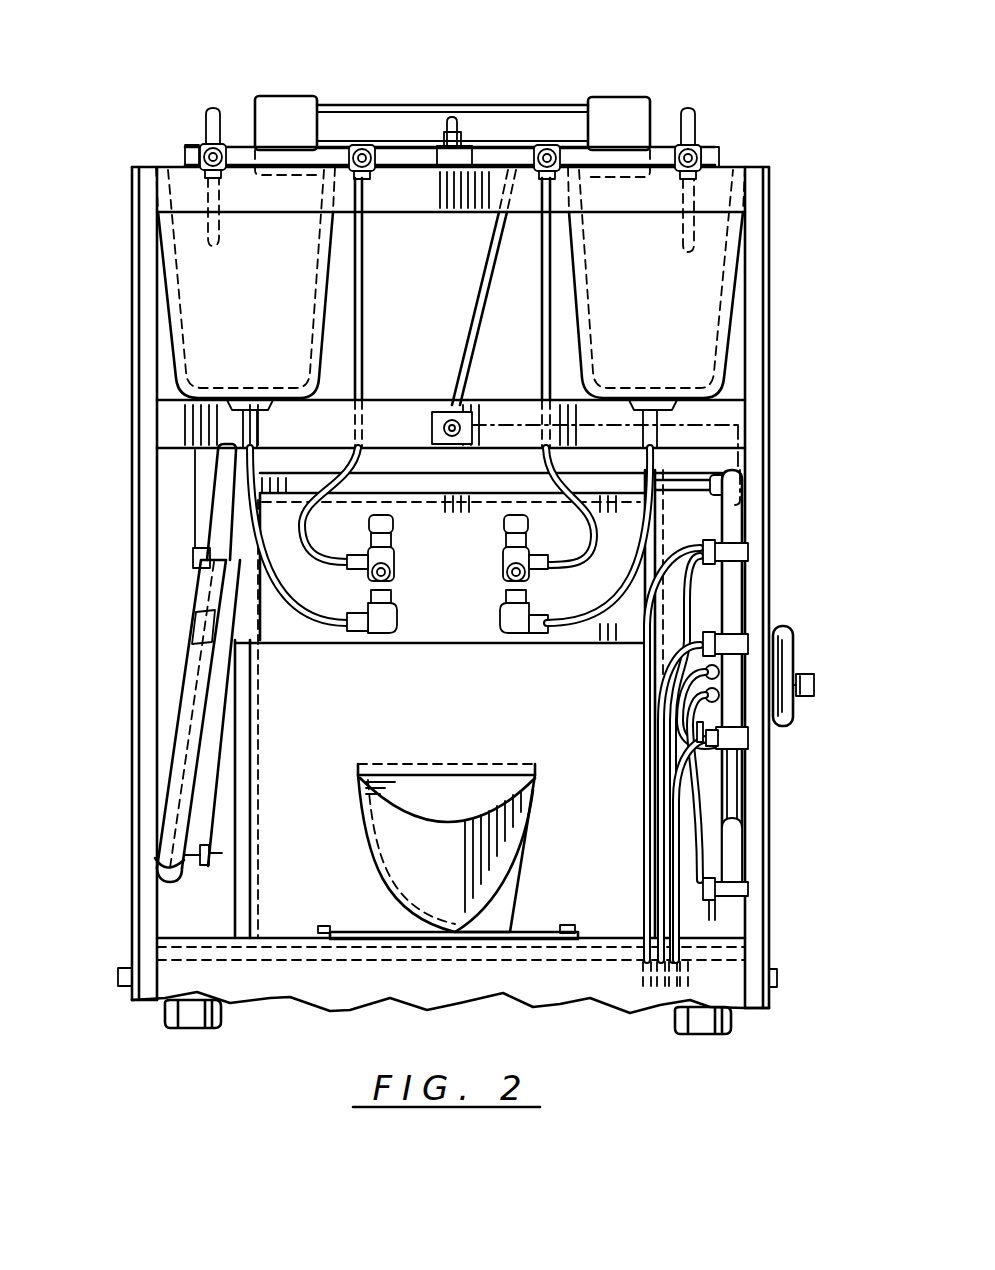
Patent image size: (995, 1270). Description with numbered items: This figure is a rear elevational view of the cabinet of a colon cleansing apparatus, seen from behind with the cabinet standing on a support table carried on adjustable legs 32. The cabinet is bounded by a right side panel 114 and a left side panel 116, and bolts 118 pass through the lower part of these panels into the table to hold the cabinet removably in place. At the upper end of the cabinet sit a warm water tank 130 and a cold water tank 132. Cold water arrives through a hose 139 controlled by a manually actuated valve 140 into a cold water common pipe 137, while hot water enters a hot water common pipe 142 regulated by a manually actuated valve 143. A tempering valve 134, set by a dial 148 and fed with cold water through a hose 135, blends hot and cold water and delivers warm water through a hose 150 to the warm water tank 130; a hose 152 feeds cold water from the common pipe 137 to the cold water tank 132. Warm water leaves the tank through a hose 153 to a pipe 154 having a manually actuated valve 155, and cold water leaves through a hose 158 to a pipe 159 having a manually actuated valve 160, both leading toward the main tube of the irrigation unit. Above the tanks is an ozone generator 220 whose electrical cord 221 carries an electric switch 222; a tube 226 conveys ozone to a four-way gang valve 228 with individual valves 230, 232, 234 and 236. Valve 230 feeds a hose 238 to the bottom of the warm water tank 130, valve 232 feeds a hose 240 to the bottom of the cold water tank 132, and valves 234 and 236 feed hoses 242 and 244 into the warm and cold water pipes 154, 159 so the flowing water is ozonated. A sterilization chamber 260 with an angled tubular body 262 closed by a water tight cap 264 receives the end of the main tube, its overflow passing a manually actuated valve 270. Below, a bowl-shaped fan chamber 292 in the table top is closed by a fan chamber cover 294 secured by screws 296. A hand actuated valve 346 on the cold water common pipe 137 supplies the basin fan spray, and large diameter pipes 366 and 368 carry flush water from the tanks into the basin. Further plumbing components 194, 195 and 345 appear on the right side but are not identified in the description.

The legs 32 is at (215, 1030).
The right side panel 114 is at (769, 275).
The left side panel 116 is at (132, 275).
The bolts 118 is at (125, 978).
The warm water tank 130 is at (612, 333).
The cold water tank 132 is at (265, 333).
The tempering valve 134 is at (791, 640).
The hose 135 is at (738, 790).
The cold water common pipe 137 is at (742, 595).
The hose 139 is at (668, 807).
The manually actuated valve 140 is at (745, 736).
The hot water common pipe 142 is at (740, 855).
The manually actuated valve 143 is at (735, 888).
The dial 148 is at (814, 686).
The hose 150 is at (652, 545).
The hose 152 is at (725, 472).
The hose 153 is at (578, 626).
The pipe 154 is at (506, 587).
The manually actuated valve 155 is at (526, 578).
The hose 158 is at (330, 625).
The pipe 159 is at (395, 562).
The manually actuated valve 160 is at (374, 576).
The hose 194 is at (655, 737).
The fitting 195 is at (742, 640).
The ozone generator 220 is at (500, 96).
The electrical cord 221 is at (483, 262).
The electric switch 222 is at (445, 413).
The tube 226 is at (452, 117).
The gang valve 228 is at (167, 135).
The valve 230 is at (700, 152).
The valve 232 is at (208, 144).
The valve 234 is at (545, 147).
The valve 236 is at (364, 147).
The hose 238 is at (694, 114).
The hose 240 is at (214, 106).
The hose 242 is at (543, 368).
The hose 244 is at (363, 320).
The sterilization chamber 260 is at (177, 656).
The tubular body 262 is at (183, 708).
The water tight cap 264 is at (160, 873).
The manually actuated valve 270 is at (222, 852).
The fan chamber 292 is at (336, 950).
The fan chamber cover 294 is at (555, 930).
The screws 296 is at (325, 926).
The hose 345 is at (640, 678).
The hand actuated valve 346 is at (742, 548).
The large diameter pipe 366 is at (674, 603).
The large diameter pipe 368 is at (222, 730).